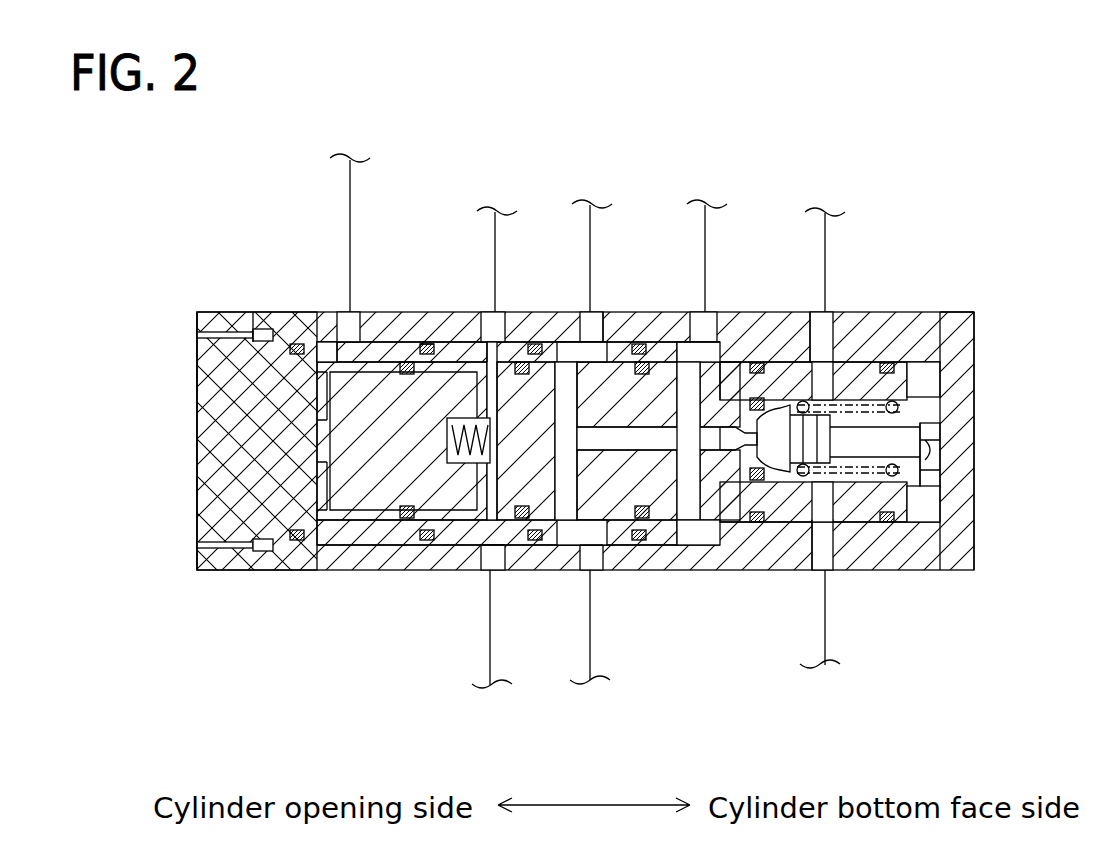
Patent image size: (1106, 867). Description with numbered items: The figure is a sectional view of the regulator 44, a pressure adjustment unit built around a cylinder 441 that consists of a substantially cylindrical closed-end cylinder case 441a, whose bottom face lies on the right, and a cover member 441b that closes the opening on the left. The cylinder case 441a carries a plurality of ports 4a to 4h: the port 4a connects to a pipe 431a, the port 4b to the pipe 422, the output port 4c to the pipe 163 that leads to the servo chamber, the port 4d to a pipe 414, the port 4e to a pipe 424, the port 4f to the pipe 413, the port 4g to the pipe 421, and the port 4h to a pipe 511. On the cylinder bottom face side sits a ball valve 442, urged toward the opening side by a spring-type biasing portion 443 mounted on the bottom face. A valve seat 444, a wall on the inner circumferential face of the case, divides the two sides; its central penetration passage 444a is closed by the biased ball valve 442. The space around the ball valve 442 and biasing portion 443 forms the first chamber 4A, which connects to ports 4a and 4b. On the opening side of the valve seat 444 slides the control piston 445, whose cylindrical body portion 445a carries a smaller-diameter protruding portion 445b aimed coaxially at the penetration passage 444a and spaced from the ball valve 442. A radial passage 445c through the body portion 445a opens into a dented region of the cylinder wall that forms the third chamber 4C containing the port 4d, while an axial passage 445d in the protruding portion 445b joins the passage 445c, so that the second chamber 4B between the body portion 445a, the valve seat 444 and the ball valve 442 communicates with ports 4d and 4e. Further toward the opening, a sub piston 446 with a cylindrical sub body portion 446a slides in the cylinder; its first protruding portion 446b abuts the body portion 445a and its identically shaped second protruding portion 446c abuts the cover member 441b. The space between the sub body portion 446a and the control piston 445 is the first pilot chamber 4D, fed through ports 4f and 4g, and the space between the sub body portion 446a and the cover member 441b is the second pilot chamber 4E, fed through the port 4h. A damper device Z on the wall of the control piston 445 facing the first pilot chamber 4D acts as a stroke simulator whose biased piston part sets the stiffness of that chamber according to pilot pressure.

The regulator 44 is at (1012, 496).
The cylinder 441 is at (989, 350).
The cylinder case 441a is at (935, 320).
The cover member 441b is at (210, 377).
The ball valve 442 is at (850, 570).
The biasing portion 443 is at (945, 546).
The valve seat 444 is at (820, 424).
The penetration passage 444a is at (762, 490).
The control piston 445 is at (526, 523).
The body portion 445a is at (497, 565).
The protruding portion 445b is at (728, 540).
The passage 445c is at (546, 555).
The passage 445d is at (620, 555).
The sub piston 446 is at (305, 532).
The sub body portion 446a is at (363, 477).
The first protruding portion 446b is at (423, 460).
The second protruding portion 446c is at (317, 450).
The pipe 511 is at (350, 197).
The pipe 413 is at (495, 240).
The pipe 414 is at (592, 232).
The pipe 163 is at (707, 232).
The pipe 431a is at (826, 255).
The pipe 421 is at (490, 677).
The pipe 424 is at (590, 675).
The pipe 422 is at (825, 628).
The first chamber 4A is at (930, 420).
The second chamber 4B is at (730, 322).
The third chamber 4C is at (615, 330).
The first pilot chamber 4D is at (430, 345).
The second pilot chamber 4E is at (272, 330).
The port 4a is at (828, 325).
The port 4b is at (823, 573).
The output port 4c is at (690, 330).
The port 4d is at (560, 330).
The port 4e is at (600, 570).
The port 4f is at (490, 345).
The port 4g is at (480, 545).
The port 4h is at (345, 338).
The damper device Z is at (459, 400).